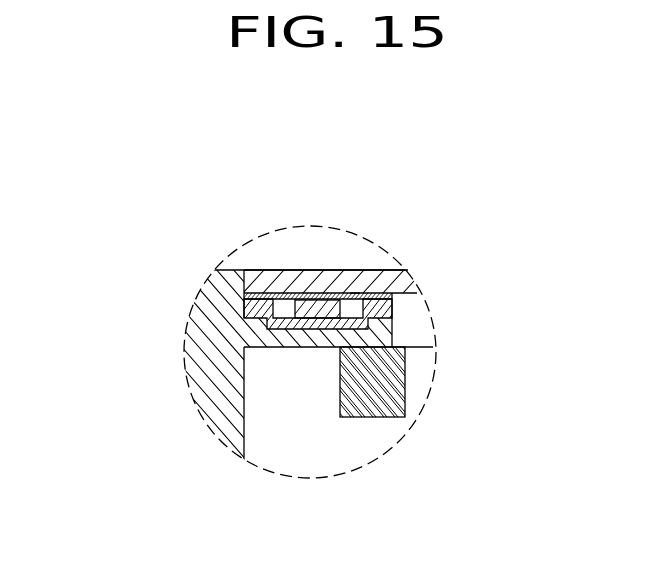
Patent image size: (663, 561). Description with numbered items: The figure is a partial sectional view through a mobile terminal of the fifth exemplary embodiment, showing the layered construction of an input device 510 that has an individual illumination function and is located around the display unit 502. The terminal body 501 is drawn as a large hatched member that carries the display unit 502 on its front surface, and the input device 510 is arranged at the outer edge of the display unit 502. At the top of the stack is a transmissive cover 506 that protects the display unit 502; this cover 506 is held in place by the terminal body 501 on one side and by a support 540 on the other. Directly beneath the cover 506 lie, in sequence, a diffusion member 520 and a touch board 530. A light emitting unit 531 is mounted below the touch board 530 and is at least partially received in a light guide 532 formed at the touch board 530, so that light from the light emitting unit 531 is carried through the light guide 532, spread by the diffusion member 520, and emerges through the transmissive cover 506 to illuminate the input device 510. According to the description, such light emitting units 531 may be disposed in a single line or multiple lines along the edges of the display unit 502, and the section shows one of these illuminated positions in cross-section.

The terminal body 501 is at (193, 315).
The display unit 502 is at (433, 351).
The transmissive cover 506 is at (408, 281).
The input device 510 is at (317, 260).
The diffusion member 520 is at (392, 304).
The touch board 530 is at (392, 315).
The light emitting unit 531 is at (318, 330).
The light guide 532 is at (350, 294).
The support 540 is at (408, 415).